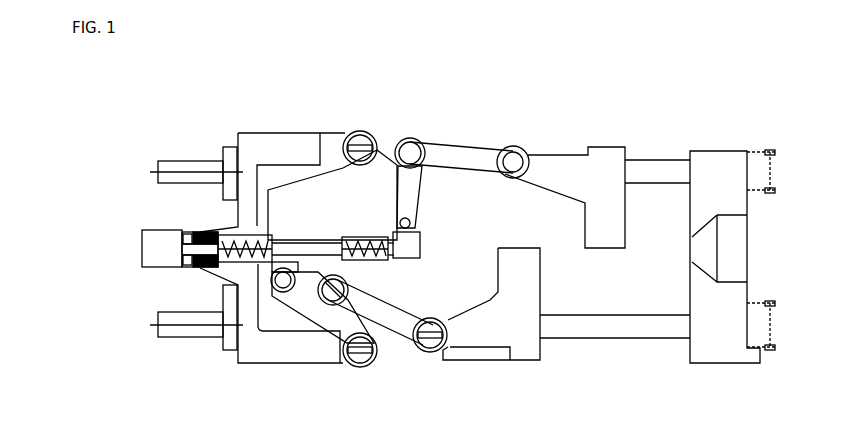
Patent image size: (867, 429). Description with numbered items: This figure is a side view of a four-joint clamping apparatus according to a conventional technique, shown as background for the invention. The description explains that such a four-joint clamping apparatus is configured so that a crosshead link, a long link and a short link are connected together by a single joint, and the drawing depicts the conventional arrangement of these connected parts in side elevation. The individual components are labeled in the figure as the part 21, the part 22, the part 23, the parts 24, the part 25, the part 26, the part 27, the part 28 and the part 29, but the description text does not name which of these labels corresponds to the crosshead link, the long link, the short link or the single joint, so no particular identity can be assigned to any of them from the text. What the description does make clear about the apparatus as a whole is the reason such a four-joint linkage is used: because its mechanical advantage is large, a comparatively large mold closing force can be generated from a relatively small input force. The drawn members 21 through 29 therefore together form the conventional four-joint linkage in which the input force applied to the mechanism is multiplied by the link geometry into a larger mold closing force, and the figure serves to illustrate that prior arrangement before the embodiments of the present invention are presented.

The motor 21 is at (142, 231).
The coupling 22 is at (247, 234).
The feed screw nut 23 is at (397, 232).
The fixed jaw / link 24 is at (727, 163).
The guide rod 25 is at (657, 165).
The frame 26 is at (327, 133).
The movable jaw 27 is at (607, 155).
The pivot pin 28 is at (398, 140).
The connecting link 29 is at (477, 152).